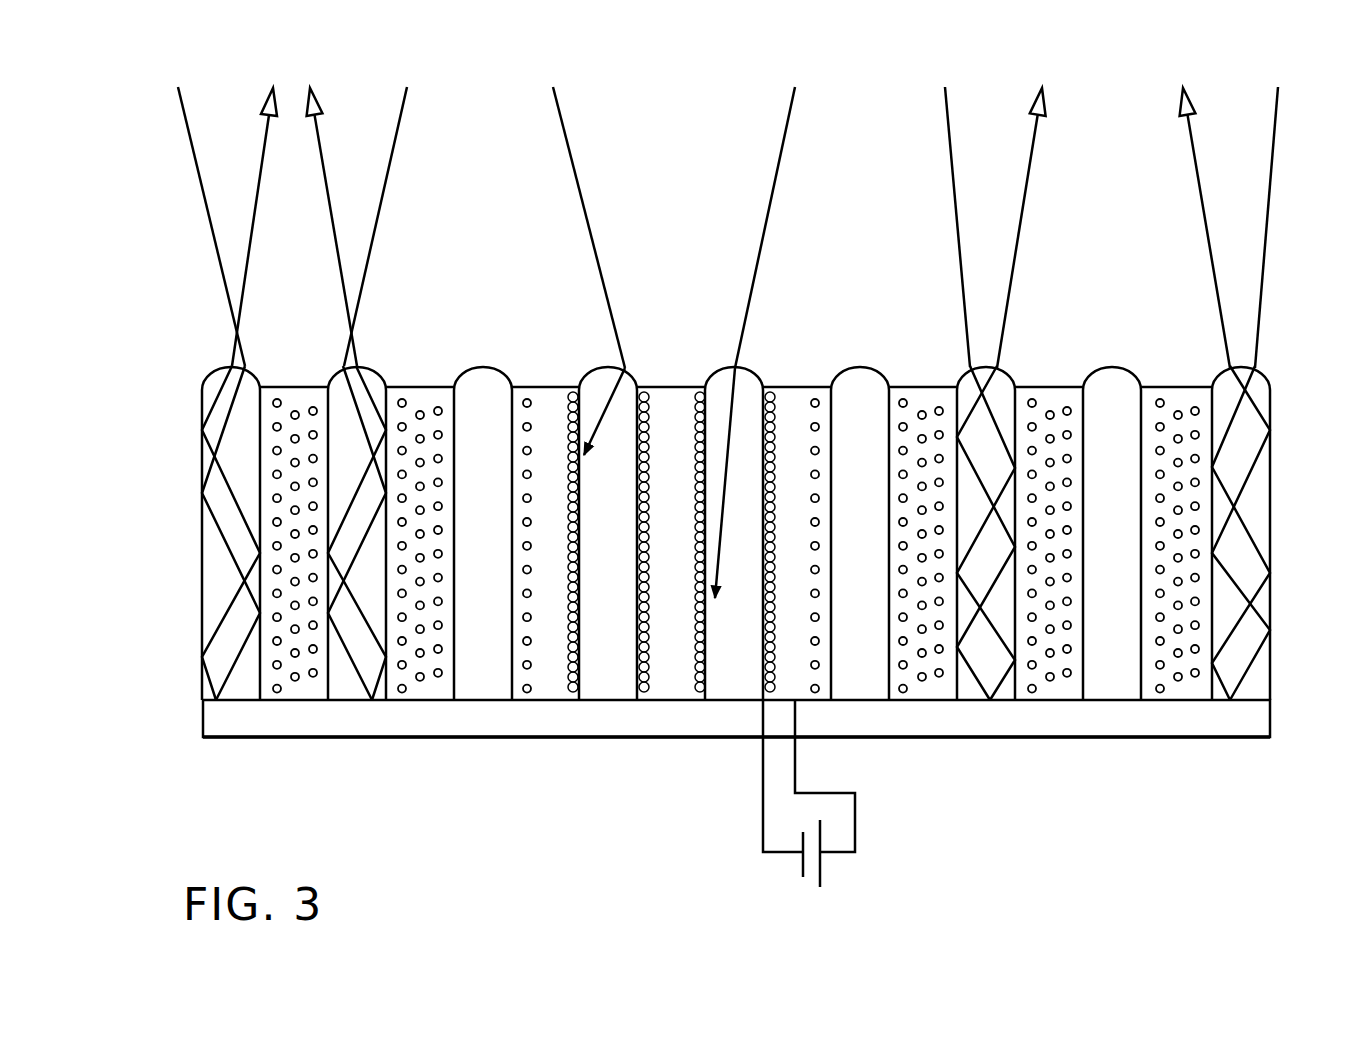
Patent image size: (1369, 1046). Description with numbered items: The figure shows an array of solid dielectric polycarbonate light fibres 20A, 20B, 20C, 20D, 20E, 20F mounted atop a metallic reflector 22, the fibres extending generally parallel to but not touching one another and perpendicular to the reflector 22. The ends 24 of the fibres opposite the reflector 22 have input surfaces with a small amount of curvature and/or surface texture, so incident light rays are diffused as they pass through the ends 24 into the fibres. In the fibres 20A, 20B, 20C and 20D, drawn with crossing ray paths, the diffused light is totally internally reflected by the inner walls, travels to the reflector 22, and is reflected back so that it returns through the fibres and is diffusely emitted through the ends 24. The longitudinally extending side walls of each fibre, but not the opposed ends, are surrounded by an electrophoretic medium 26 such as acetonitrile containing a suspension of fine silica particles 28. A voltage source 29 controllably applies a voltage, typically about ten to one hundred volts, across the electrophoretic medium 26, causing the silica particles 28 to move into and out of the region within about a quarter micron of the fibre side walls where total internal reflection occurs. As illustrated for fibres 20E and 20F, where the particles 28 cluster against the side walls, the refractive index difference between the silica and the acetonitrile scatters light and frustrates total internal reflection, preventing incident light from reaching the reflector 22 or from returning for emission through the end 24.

The light fibre 20A is at (214, 364).
The light fibre 20B is at (375, 363).
The light fibre 20C is at (1013, 363).
The light fibre 20D is at (1266, 364).
The light fibre 20E is at (632, 366).
The light fibre 20F is at (755, 363).
The metallic reflector 22 is at (1034, 716).
The fibre end 24 is at (583, 366).
The electrophoretic medium 26 is at (552, 688).
The electrophoretic particles 28 is at (297, 693).
The voltage source 29 is at (862, 860).